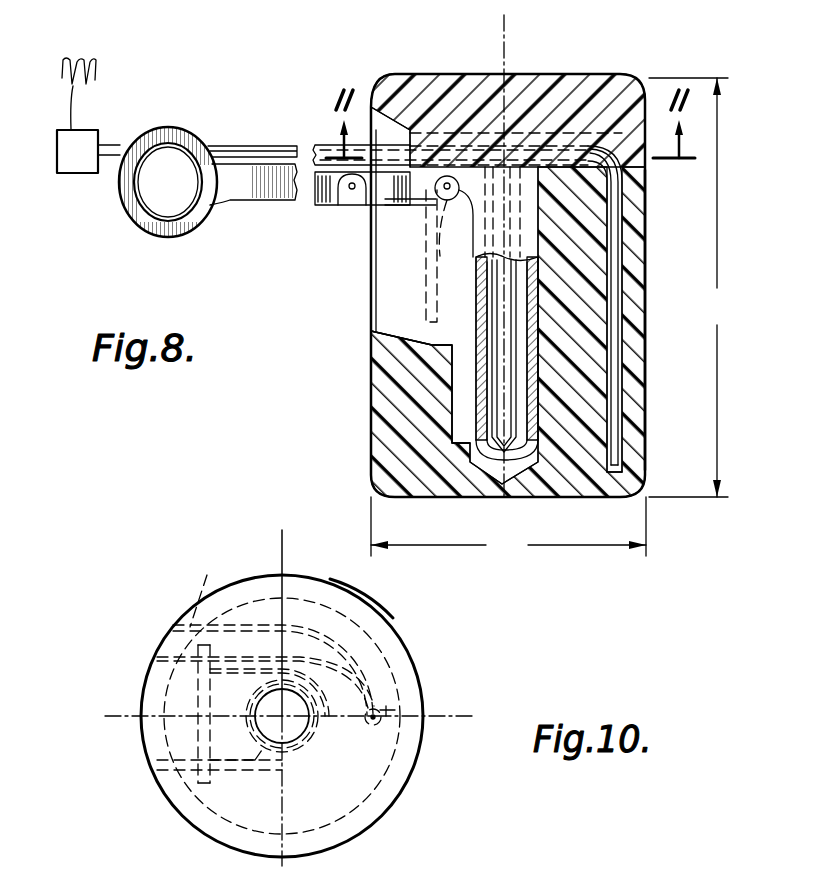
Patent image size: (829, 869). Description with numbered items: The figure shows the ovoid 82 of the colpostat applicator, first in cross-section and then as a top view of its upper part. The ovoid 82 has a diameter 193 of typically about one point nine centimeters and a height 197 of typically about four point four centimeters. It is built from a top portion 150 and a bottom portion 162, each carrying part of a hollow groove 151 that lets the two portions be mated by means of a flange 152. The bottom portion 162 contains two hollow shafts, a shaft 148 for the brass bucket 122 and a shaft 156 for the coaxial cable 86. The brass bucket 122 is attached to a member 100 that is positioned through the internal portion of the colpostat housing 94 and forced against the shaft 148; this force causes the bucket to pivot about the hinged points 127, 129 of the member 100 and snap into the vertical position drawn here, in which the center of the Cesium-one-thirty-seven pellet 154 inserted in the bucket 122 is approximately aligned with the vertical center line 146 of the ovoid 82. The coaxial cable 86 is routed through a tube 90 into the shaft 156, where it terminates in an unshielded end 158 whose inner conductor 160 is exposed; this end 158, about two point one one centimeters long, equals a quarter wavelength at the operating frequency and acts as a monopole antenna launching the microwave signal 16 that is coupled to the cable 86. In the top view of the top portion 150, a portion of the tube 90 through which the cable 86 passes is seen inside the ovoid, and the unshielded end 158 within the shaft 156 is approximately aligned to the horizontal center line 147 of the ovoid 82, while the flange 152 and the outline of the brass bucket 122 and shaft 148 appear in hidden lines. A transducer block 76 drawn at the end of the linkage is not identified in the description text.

In FIG. 8, the microwave signal 16 is at (96, 60).
In FIG. 8, the transducer box 76 is at (80, 173).
In FIG. 8, the coaxial cable 86 is at (238, 146).
In FIG. 10, the coaxial cable 86 is at (208, 592).
In FIG. 8, the member 100 is at (248, 201).
In FIG. 8, the tube 90 is at (320, 145).
In FIG. 10, the tube 90 is at (183, 622).
In FIG. 8, the hinged point 129 is at (350, 205).
In FIG. 8, the hinged point 127 is at (445, 197).
In FIG. 8, the hollow groove 151 is at (446, 262).
In FIG. 8, the brass bucket 122 is at (475, 277).
In FIG. 10, the brass bucket 122 is at (200, 690).
In FIG. 8, the Cesium-137 pellet 154 is at (493, 312).
In FIG. 8, the hollow shaft 148 is at (463, 383).
In FIG. 10, the hollow shaft 148 is at (262, 765).
In FIG. 8, the center line 146 is at (504, 44).
In FIG. 10, the center line 146 is at (282, 548).
In FIG. 8, the top portion 150 is at (592, 74).
In FIG. 10, the top portion 150 is at (364, 606).
In FIG. 8, the ovoid 82 is at (690, 70).
In FIG. 10, the ovoid 82 is at (418, 645).
In FIG. 8, the hollow shaft 156 is at (637, 205).
In FIG. 8, the bottom portion 162 is at (648, 272).
In FIG. 8, the height 197 is at (689, 287).
In FIG. 8, the unshielded end 158 is at (622, 352).
In FIG. 10, the unshielded end 158 is at (405, 703).
In FIG. 8, the inner conductor 160 is at (612, 406).
In FIG. 10, the inner conductor 160 is at (370, 730).
In FIG. 8, the diameter 193 is at (508, 529).
In FIG. 10, the flange 152 is at (197, 800).
In FIG. 10, the colpostat housing 94 is at (173, 733).
In FIG. 10, the horizontal center line 147 is at (455, 718).